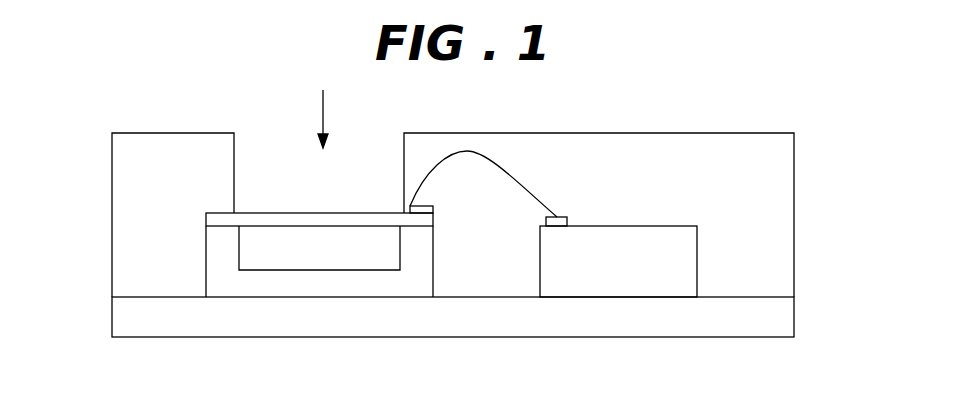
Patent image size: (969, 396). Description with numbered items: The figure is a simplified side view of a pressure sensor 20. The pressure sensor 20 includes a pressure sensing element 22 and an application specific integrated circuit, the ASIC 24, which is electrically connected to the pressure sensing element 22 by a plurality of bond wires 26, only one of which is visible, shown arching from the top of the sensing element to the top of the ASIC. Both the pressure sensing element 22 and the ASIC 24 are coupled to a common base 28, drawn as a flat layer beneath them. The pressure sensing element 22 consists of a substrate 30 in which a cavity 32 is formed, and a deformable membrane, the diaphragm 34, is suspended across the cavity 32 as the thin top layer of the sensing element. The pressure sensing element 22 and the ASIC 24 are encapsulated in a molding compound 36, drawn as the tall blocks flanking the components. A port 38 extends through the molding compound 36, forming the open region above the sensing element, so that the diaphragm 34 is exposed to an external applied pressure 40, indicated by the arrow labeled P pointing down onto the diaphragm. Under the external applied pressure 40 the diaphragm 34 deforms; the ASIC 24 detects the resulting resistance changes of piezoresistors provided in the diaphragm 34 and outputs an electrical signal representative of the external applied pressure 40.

The pressure sensor 20 is at (456, 214).
The pressure sensing element 22 is at (218, 213).
The application specific integrated circuit (ASIC) 24 is at (673, 228).
The bond wires 26 is at (510, 178).
The common base 28 is at (120, 312).
The substrate 30 is at (418, 273).
The cavity 32 is at (319, 248).
The diaphragm 34 is at (305, 213).
The molding compound 36 is at (786, 172).
The port 38 is at (319, 198).
The external applied pressure 40 is at (320, 103).